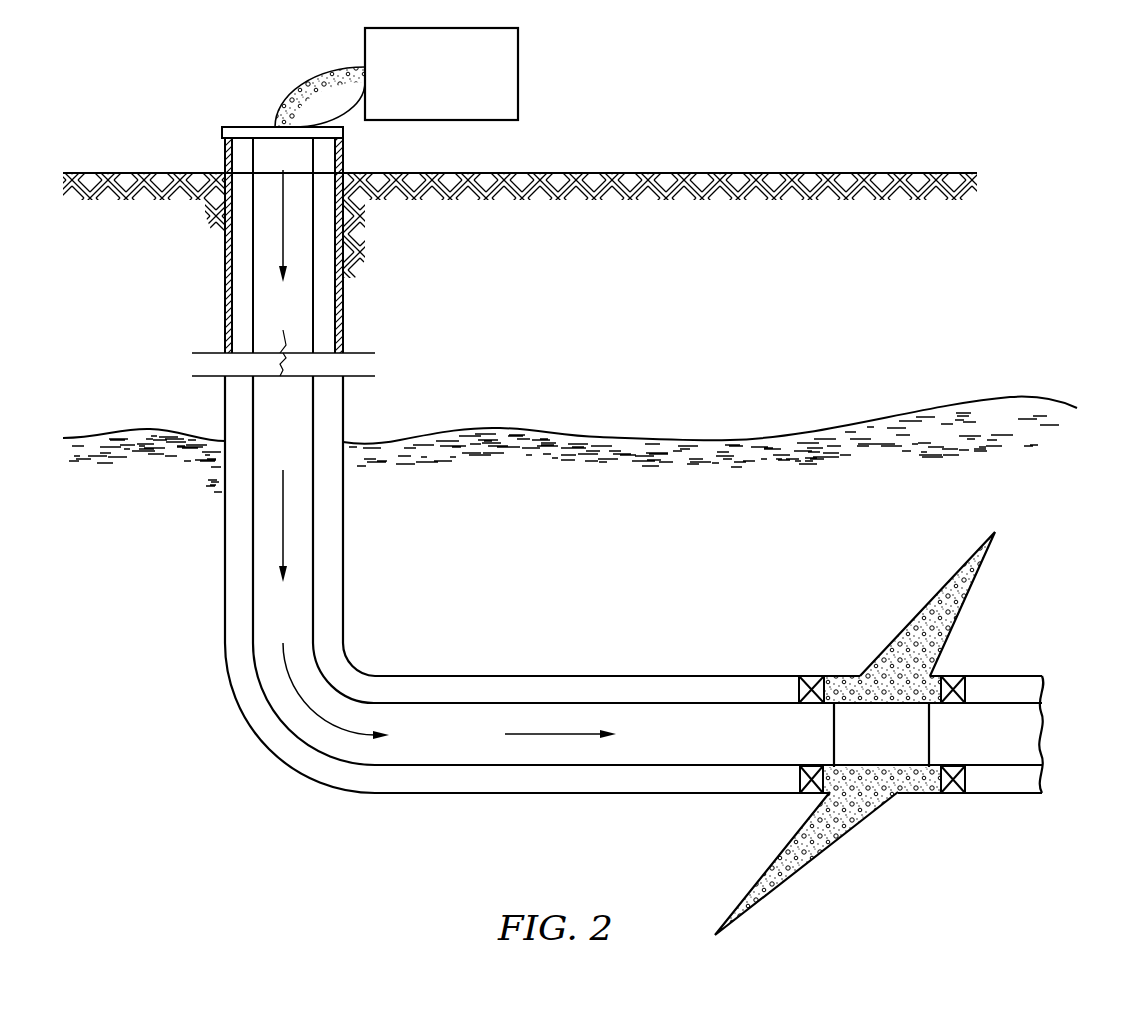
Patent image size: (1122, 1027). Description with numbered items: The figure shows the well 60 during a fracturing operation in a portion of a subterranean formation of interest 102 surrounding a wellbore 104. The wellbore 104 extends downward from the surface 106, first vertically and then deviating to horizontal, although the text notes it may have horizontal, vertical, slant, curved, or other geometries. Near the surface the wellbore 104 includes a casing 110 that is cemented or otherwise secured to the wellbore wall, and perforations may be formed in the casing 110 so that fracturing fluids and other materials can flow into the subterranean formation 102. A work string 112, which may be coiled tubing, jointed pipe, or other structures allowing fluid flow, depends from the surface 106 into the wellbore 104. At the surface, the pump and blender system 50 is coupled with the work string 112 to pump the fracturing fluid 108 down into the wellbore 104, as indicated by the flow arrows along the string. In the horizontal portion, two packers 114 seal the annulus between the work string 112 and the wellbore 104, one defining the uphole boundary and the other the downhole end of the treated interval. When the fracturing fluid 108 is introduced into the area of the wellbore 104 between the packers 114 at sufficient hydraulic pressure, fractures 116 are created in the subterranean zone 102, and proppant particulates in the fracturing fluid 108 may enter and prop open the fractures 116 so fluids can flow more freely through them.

The pump and blender system 50 is at (456, 89).
The well 60 is at (232, 748).
The subterranean formation 102 is at (575, 514).
The wellbore 104 is at (237, 253).
The surface 106 is at (810, 173).
The fracturing fluid 108 is at (310, 78).
The casing 110 is at (225, 297).
The work string 112 is at (253, 588).
The packers 114 is at (812, 676).
The fractures 116 is at (904, 602).